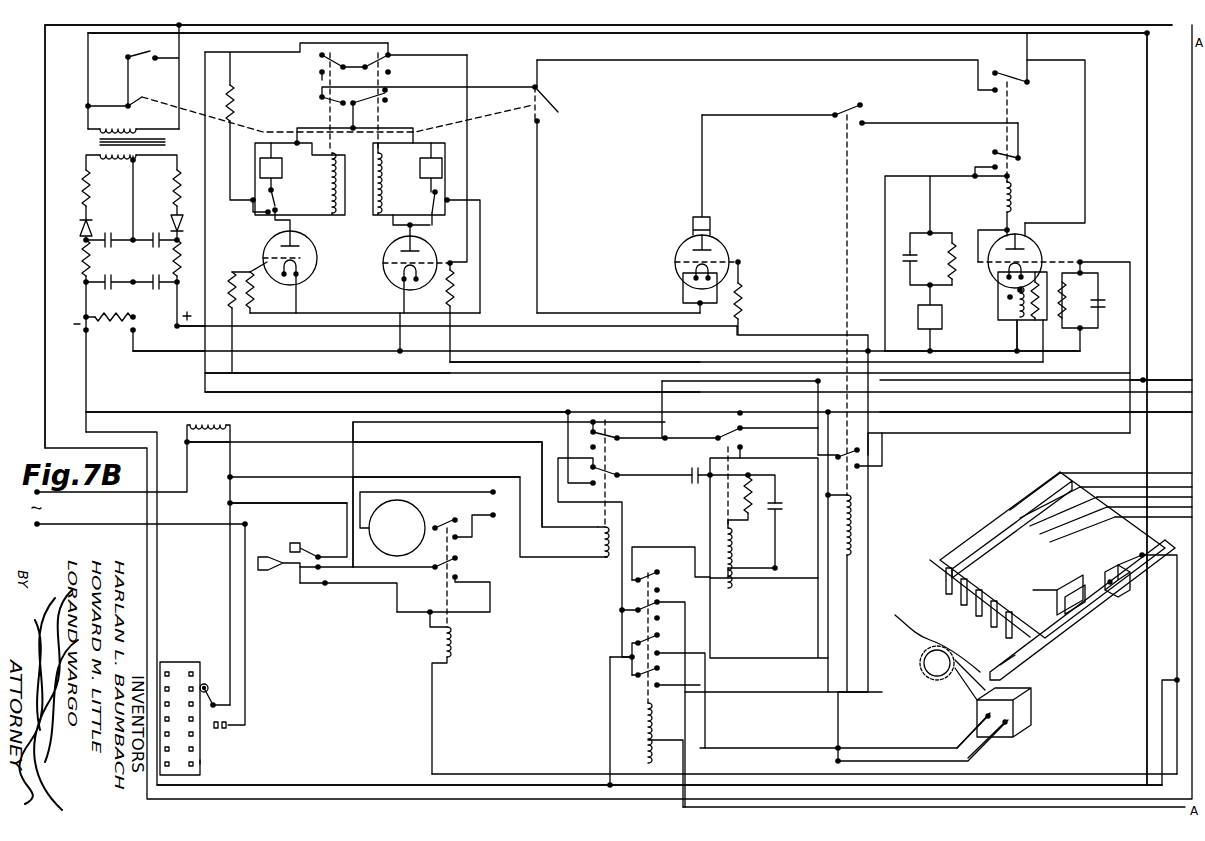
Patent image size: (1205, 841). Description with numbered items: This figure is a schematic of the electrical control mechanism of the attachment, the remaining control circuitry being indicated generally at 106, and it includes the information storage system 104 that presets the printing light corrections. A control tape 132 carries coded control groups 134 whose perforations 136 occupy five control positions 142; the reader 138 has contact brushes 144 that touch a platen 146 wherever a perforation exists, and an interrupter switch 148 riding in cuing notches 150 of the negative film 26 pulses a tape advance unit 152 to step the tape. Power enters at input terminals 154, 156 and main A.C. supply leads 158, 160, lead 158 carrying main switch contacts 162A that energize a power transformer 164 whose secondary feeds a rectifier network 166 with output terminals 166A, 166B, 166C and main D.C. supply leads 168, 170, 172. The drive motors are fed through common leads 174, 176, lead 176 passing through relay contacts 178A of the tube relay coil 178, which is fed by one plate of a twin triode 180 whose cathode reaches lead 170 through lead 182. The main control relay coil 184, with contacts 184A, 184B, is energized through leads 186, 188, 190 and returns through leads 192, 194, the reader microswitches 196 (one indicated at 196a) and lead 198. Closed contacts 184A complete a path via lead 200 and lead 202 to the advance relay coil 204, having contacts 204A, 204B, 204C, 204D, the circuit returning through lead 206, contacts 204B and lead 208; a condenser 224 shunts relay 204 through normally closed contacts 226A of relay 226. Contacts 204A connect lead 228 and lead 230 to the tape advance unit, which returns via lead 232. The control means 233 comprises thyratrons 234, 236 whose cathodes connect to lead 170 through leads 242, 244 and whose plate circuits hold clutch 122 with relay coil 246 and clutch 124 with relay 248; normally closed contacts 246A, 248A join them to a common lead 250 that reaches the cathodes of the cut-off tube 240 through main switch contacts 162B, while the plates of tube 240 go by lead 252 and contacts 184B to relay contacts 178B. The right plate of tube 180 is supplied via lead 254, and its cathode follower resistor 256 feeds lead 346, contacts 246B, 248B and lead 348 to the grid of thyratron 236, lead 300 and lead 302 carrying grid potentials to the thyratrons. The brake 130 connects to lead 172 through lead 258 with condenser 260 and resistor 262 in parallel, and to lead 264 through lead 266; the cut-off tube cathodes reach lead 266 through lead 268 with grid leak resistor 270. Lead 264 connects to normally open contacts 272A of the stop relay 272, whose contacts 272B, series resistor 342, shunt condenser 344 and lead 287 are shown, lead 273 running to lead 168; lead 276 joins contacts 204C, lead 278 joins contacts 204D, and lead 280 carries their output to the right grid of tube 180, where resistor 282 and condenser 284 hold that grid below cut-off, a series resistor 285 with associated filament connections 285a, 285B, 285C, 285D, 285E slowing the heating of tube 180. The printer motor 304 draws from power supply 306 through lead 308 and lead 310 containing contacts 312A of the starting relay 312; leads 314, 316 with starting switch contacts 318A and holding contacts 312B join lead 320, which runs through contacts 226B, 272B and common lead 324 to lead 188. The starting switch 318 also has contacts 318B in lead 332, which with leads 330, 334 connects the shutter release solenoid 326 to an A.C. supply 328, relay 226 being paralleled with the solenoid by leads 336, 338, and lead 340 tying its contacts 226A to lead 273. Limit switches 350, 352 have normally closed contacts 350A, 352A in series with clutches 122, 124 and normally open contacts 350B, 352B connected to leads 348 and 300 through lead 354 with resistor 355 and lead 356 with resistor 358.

The negative film 26 is at (204, 760).
The information storage system 104 is at (953, 493).
The circuit 106 is at (366, 694).
The clutch 122 is at (300, 134).
The clutch 124 is at (409, 134).
The brake 130 is at (942, 316).
The control tape 132 is at (892, 610).
The control groups 134 is at (935, 574).
The perforations 136 is at (1044, 652).
The reader 138 is at (974, 534).
The control positions 142 is at (924, 601).
The contact brushes 144 is at (1046, 620).
The platen 146 is at (1008, 650).
The interrupter switch 148 is at (211, 675).
The cuing notches 150 is at (226, 722).
The tape advance unit 152 is at (1032, 720).
The input terminal 154 is at (124, 54).
The input terminal 156 is at (160, 49).
The main A.C. supply lead 158 is at (128, 77).
The main A.C. supply lead 160 is at (179, 82).
The main switch contacts 162A is at (309, 112).
The main switch contacts 162B is at (550, 125).
The power transformer 164 is at (93, 145).
The rectifier network 166 is at (78, 232).
The output terminal 166A is at (82, 336).
The output terminal 166B is at (130, 336).
The output terminal 166C is at (170, 324).
The main D.C. supply lead 168 is at (90, 388).
The main D.C. supply lead 170 is at (132, 352).
The main D.C. supply lead 172 is at (194, 328).
The motor lead 174 is at (610, 37).
The motor lead 176 is at (530, 40).
The tube relay coil 178 is at (1012, 196).
The relay contacts 178A is at (1016, 88).
The relay contacts 178B is at (991, 159).
The twin triode 180 is at (1042, 251).
The lead 182 is at (1017, 350).
The main control relay coil 184 is at (856, 548).
The main relay contacts 184A is at (862, 460).
The main relay contacts 184B is at (840, 102).
The lead 186 is at (1143, 163).
The lead 188 is at (1174, 380).
The lead 190 is at (834, 418).
The lead 192 is at (845, 648).
The lead 194 is at (1168, 595).
The microswitches 196 is at (1103, 555).
The switch actuator 196a is at (1091, 603).
The lead 198 is at (45, 270).
The lead 200 is at (864, 543).
The lead 202 is at (709, 644).
The relay coil 204 is at (627, 732).
The normally open contacts 204A is at (680, 560).
The normally closed contacts 204B is at (678, 608).
The normally open contacts 204C is at (678, 637).
The normally open contacts 204D is at (678, 680).
The lead 206 is at (620, 648).
The lead 208 is at (674, 772).
The condenser 224 is at (680, 484).
The relay 226 is at (595, 541).
The normally closed contacts 226A is at (610, 466).
The normally closed contacts 226B is at (640, 412).
The lead 228 is at (754, 582).
The lead 230 is at (791, 745).
The lead 232 is at (970, 750).
The control means 233 is at (653, 104).
The thyratron tube 234 is at (318, 248).
The thyratron tube 236 is at (377, 272).
The twin triode power tube 240 is at (732, 249).
The lead 242 is at (300, 299).
The lead 244 is at (395, 302).
The relay coil 246 is at (284, 168).
The normally closed contacts 246A is at (407, 101).
The normally closed contacts 246B is at (306, 85).
The relay 248 is at (388, 194).
The normally closed contacts 248A is at (395, 102).
The normally closed contacts 248B is at (395, 68).
The common lead 250 is at (542, 236).
The lead 252 is at (703, 170).
The lead 254 is at (745, 78).
The cathode follower resistor 256 is at (1038, 323).
The lead 258 is at (935, 240).
The condenser 260 is at (947, 262).
The resistor 262 is at (925, 280).
The lead 264 is at (983, 412).
The lead 266 is at (936, 348).
The lead 268 is at (818, 332).
The grid leak resistor 270 is at (746, 287).
The stop relay 272 is at (745, 558).
The normally open contacts 272A is at (777, 414).
The normally closed contacts 272B is at (752, 480).
The lead 273 is at (466, 411).
The lead 276 is at (802, 656).
The lead 278 is at (610, 740).
The lead 280 is at (1128, 248).
The resistor 282 is at (1078, 312).
The condenser 284 is at (1105, 306).
The series resistor 285 is at (1008, 292).
The lead 285a is at (1090, 470).
The lead 285B is at (1060, 470).
The lead 285C is at (1056, 472).
The lead 285D is at (1046, 486).
The lead 285E is at (1032, 500).
The lead 287 is at (1146, 468).
The lead 300 is at (533, 390).
The lead 302 is at (577, 358).
The printer motor 304 is at (428, 522).
The power supply 306 is at (482, 498).
The lead 308 is at (470, 470).
The lead 310 is at (432, 518).
The starting relay 312 is at (449, 644).
The normally open contacts 312A is at (470, 538).
The holding contacts 312B is at (462, 566).
The lead 314 is at (395, 588).
The lead 316 is at (390, 568).
The starting switch 318 is at (273, 580).
The normally open contacts 318A is at (320, 582).
The normally open contacts 318B is at (292, 554).
The lead 320 is at (400, 442).
The common lead 324 is at (706, 418).
The shutter release solenoid 326 is at (232, 428).
The A.C. supply 328 is at (55, 512).
The lead 330 is at (190, 462).
The lead 332 is at (278, 510).
The lead 334 is at (238, 484).
The lead 336 is at (348, 428).
The lead 338 is at (334, 476).
The lead 340 is at (548, 445).
The resistor 342 is at (752, 497).
The condenser 344 is at (784, 516).
The lead 346 is at (374, 368).
The lead 348 is at (480, 238).
The limit switch 350 is at (268, 191).
The normally closed contacts 350A is at (292, 215).
The normally open contacts 350B is at (264, 216).
The limit switch 352 is at (443, 226).
The normally closed contacts 352A is at (440, 190).
The normally open contacts 352B is at (453, 200).
The lead 354 is at (238, 68).
The resistor 355 is at (238, 118).
The lead 356 is at (480, 272).
The resistor 358 is at (245, 267).